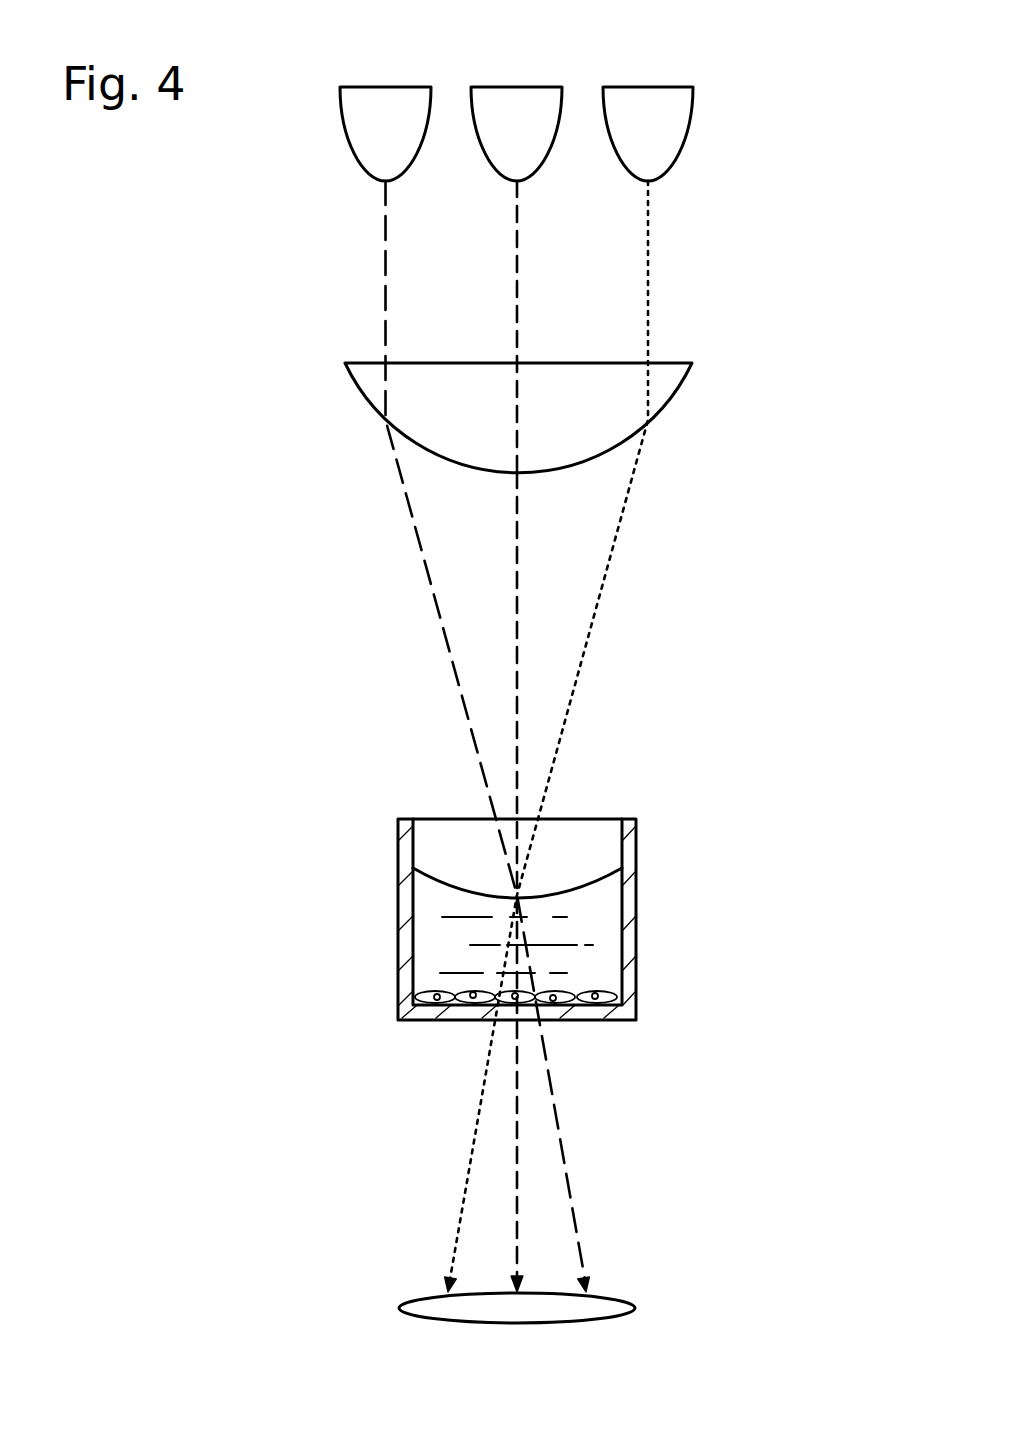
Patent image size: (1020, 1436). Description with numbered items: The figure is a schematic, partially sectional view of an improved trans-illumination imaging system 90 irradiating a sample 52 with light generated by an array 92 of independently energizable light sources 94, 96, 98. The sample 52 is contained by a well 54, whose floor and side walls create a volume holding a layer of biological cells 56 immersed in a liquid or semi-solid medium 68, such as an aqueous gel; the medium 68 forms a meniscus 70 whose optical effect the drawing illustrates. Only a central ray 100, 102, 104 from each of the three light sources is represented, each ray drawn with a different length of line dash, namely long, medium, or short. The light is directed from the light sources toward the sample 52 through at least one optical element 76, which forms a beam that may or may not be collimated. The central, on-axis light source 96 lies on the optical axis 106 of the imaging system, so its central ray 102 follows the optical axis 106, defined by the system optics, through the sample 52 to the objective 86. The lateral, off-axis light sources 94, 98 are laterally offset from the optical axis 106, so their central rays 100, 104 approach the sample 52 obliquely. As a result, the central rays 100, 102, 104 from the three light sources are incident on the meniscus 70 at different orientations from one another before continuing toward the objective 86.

The trans-illumination imaging system 90 is at (229, 272).
The array of light sources 92 is at (343, 59).
The off-axis light source 94 is at (384, 86).
The on-axis light source 96 is at (516, 86).
The off-axis light source 98 is at (647, 86).
The central ray 100 is at (383, 273).
The central ray 102 is at (515, 273).
The central ray 104 is at (646, 273).
The optical axis 106 is at (515, 563).
The optical element 76 is at (673, 397).
The well 54 is at (412, 832).
The sample 52 is at (452, 880).
The meniscus 70 is at (600, 875).
The medium 68 is at (597, 922).
The biological cells 56 is at (563, 992).
The objective 86 is at (592, 1323).